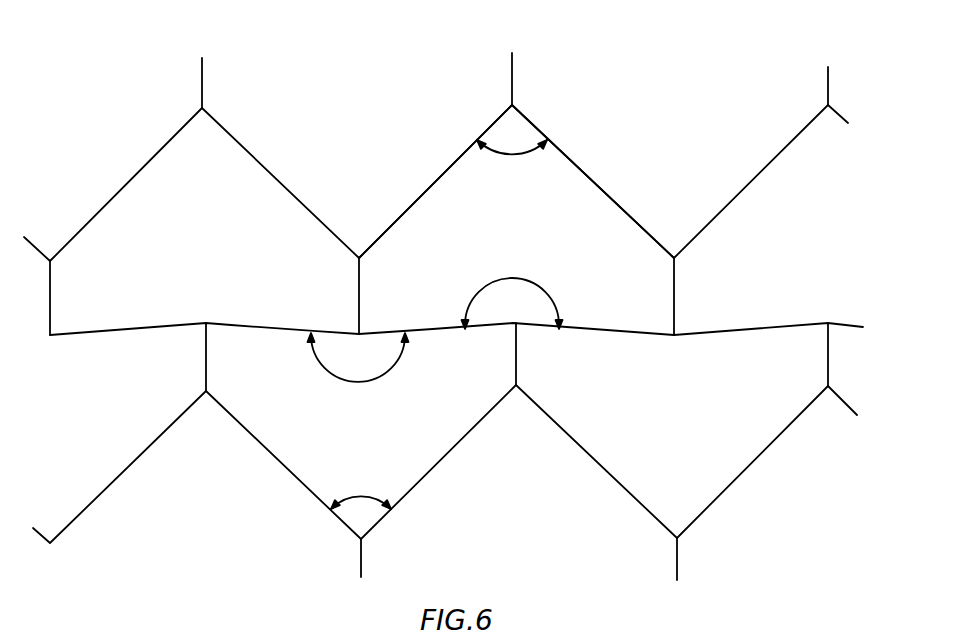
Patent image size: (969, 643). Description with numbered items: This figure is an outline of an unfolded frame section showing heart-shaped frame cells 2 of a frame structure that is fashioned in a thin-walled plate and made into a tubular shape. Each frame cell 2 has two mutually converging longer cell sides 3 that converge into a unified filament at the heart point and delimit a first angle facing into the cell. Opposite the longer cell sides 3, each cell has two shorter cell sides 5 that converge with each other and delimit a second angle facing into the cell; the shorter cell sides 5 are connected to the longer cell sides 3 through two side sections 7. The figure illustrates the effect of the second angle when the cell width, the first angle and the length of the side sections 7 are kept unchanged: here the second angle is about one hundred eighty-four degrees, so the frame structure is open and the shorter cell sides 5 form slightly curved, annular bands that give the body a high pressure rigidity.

The frame cell 2 is at (190, 248).
The longer cell side 3 is at (447, 168).
The shorter cell side 5 is at (435, 333).
The side section 7 is at (514, 84).